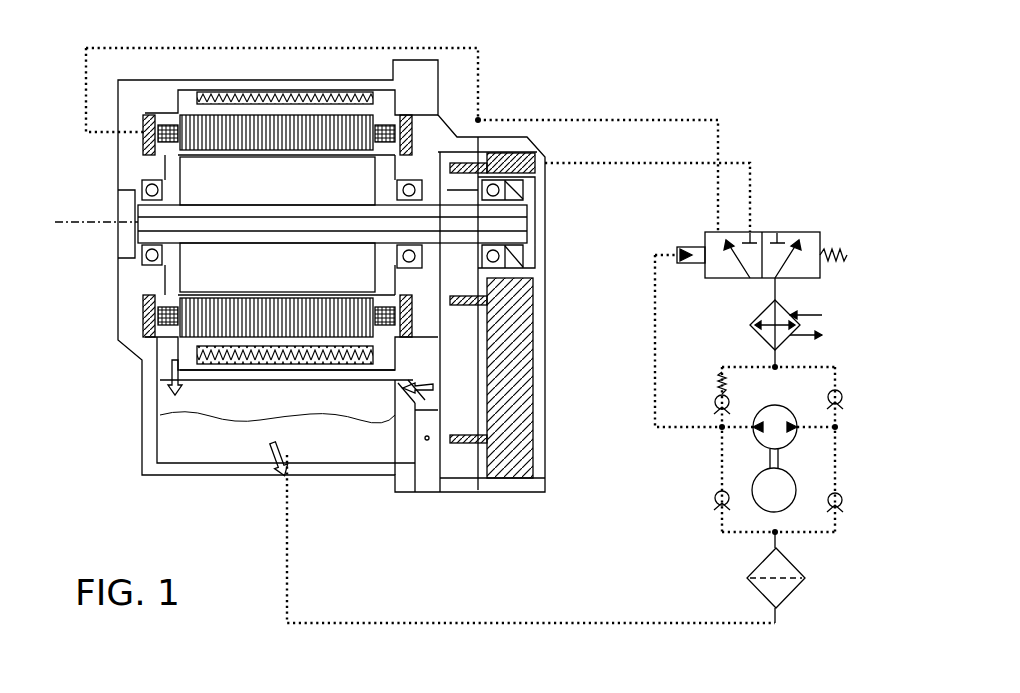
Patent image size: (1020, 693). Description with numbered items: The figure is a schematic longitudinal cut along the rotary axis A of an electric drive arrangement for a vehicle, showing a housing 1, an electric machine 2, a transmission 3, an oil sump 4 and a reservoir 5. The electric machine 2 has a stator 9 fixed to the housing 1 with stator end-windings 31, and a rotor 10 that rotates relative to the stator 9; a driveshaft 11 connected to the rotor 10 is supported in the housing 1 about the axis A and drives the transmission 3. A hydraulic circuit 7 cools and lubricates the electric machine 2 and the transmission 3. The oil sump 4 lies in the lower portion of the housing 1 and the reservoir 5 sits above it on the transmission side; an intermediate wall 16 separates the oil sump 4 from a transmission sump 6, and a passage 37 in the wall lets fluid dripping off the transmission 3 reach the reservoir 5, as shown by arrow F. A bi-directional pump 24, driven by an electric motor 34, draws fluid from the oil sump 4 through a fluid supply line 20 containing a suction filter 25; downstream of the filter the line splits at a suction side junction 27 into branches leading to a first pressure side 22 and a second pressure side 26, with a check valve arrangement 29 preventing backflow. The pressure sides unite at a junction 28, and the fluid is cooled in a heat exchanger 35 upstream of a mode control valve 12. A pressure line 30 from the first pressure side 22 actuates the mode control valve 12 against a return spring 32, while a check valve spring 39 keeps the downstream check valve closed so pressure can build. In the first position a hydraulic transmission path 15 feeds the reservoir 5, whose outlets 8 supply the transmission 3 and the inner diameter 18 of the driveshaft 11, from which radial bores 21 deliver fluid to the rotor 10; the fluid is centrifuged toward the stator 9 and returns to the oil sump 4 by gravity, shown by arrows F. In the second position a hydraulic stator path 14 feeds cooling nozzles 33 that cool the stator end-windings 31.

The housing 1 is at (152, 425).
The electric machine 2 is at (130, 350).
The transmission 3 is at (470, 342).
The oil sump 4 is at (264, 452).
The reservoir 5 is at (528, 155).
The transmission sump 6 is at (450, 462).
The hydraulic circuit 7 is at (708, 100).
The outlets 8 is at (475, 160).
The stator 9 is at (330, 125).
The rotor 10 is at (284, 190).
The driveshaft 11 is at (145, 181).
The mode control valve 12 is at (790, 232).
The hydraulic stator path 14 is at (640, 120).
The hydraulic transmission path 15 is at (755, 163).
The intermediate wall 16 is at (427, 438).
The inner diameter 18 is at (160, 232).
The fluid supply line 20 is at (545, 622).
The radial bores 21 is at (185, 176).
The first pressure side 22 is at (732, 431).
The bi-directional pump 24 is at (790, 425).
The suction filter 25 is at (800, 582).
The second pressure side 26 is at (840, 432).
The suction side junction 27 is at (780, 535).
The junction 28 is at (778, 367).
The check valve arrangement 29 is at (715, 405).
The pressure line 30 is at (655, 420).
The stator end-windings 31 is at (168, 130).
The return spring 32 is at (838, 252).
The cooling nozzles 33 is at (148, 118).
The electric motor 34 is at (760, 505).
The heat exchanger 35 is at (795, 318).
The passage 37 is at (427, 402).
The check valve spring 39 is at (722, 380).
The rotary axis A is at (58, 240).
The arrows F is at (150, 378).